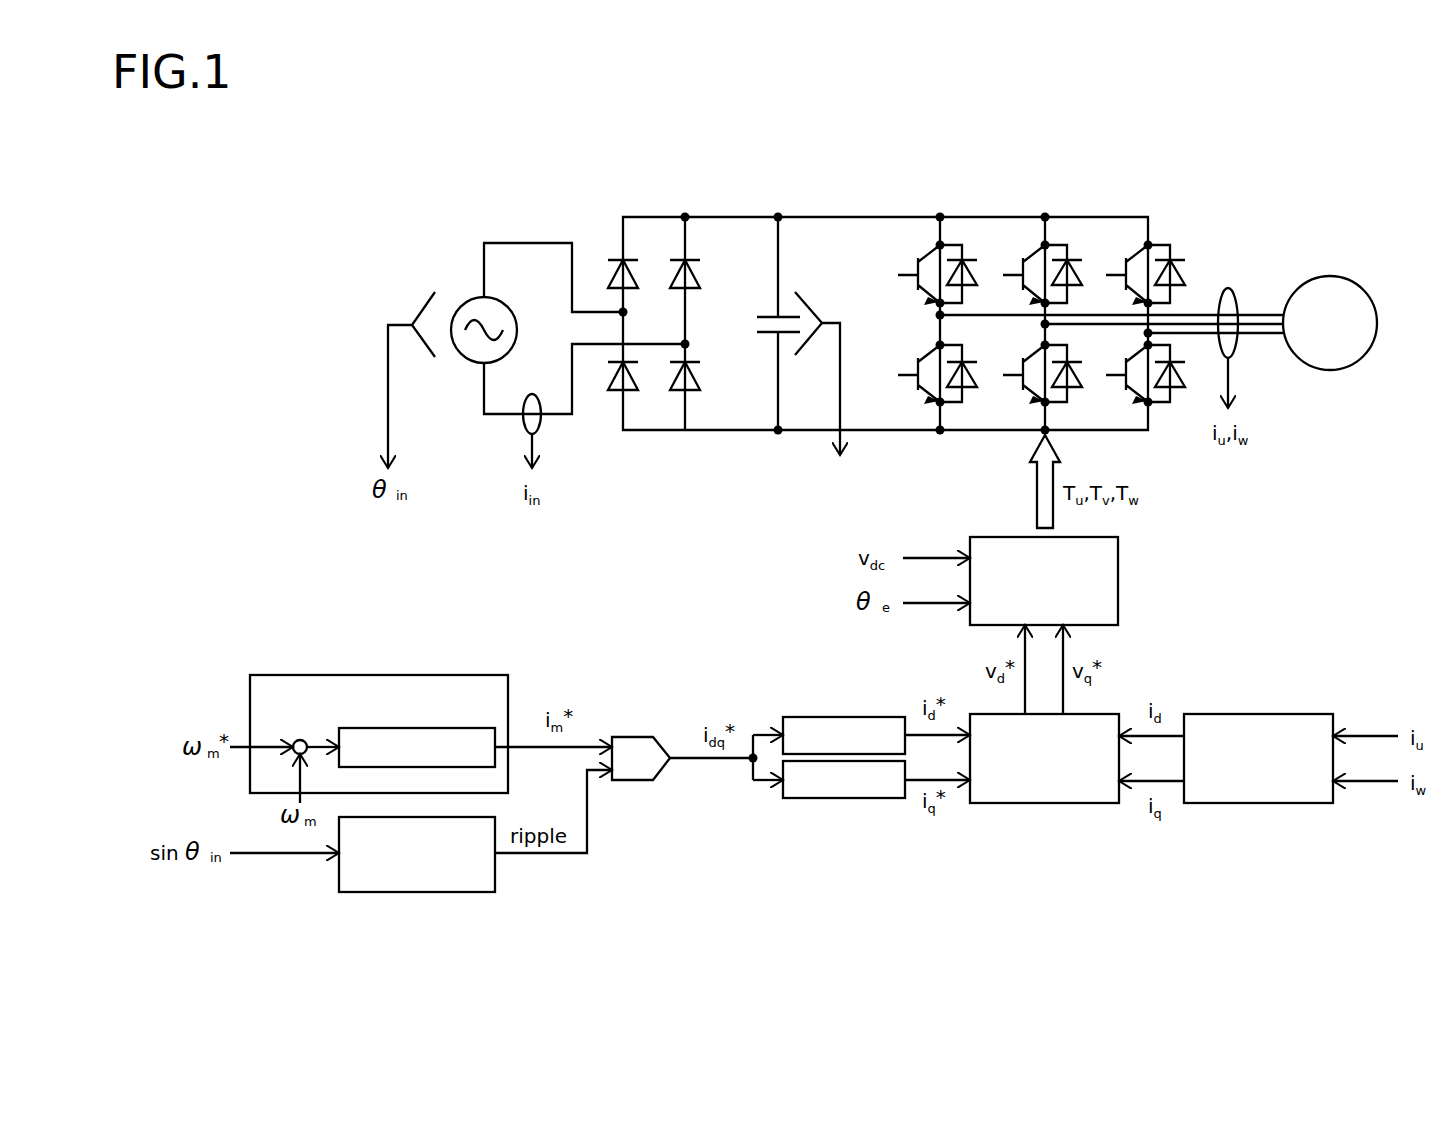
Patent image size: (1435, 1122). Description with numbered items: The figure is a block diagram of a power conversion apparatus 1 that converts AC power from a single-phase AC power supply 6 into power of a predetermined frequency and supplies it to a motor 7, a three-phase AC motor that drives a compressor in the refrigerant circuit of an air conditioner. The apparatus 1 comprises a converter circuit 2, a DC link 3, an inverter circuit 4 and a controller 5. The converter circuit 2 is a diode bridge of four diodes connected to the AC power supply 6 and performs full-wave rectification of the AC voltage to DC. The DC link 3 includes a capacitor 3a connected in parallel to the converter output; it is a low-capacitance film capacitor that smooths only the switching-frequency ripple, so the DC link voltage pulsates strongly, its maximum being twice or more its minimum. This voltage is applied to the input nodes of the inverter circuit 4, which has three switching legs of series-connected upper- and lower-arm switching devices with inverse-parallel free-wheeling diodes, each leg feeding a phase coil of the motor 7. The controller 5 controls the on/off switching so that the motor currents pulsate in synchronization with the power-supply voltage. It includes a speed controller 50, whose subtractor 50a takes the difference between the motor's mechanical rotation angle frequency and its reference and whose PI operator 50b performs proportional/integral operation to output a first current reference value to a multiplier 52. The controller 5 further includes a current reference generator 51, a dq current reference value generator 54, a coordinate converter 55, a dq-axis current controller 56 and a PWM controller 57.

The power conversion apparatus 1 is at (951, 108).
The converter circuit 2 is at (652, 210).
The DC link 3 is at (801, 210).
The capacitor 3a is at (757, 340).
The inverter circuit 4 is at (1077, 210).
The controller 5 is at (922, 860).
The single-phase AC power supply 6 is at (466, 297).
The motor 7 is at (1330, 277).
The speed controller 50 is at (278, 675).
The subtractor 50a is at (293, 740).
The PI operator 50b is at (493, 727).
The current reference generator 51 is at (417, 892).
The multiplier 52 is at (637, 780).
The dq current reference value generator 54 is at (844, 805).
The coordinate converter 55 is at (1258, 803).
The dq-axis current controller 56 is at (1040, 803).
The PWM controller 57 is at (1118, 585).